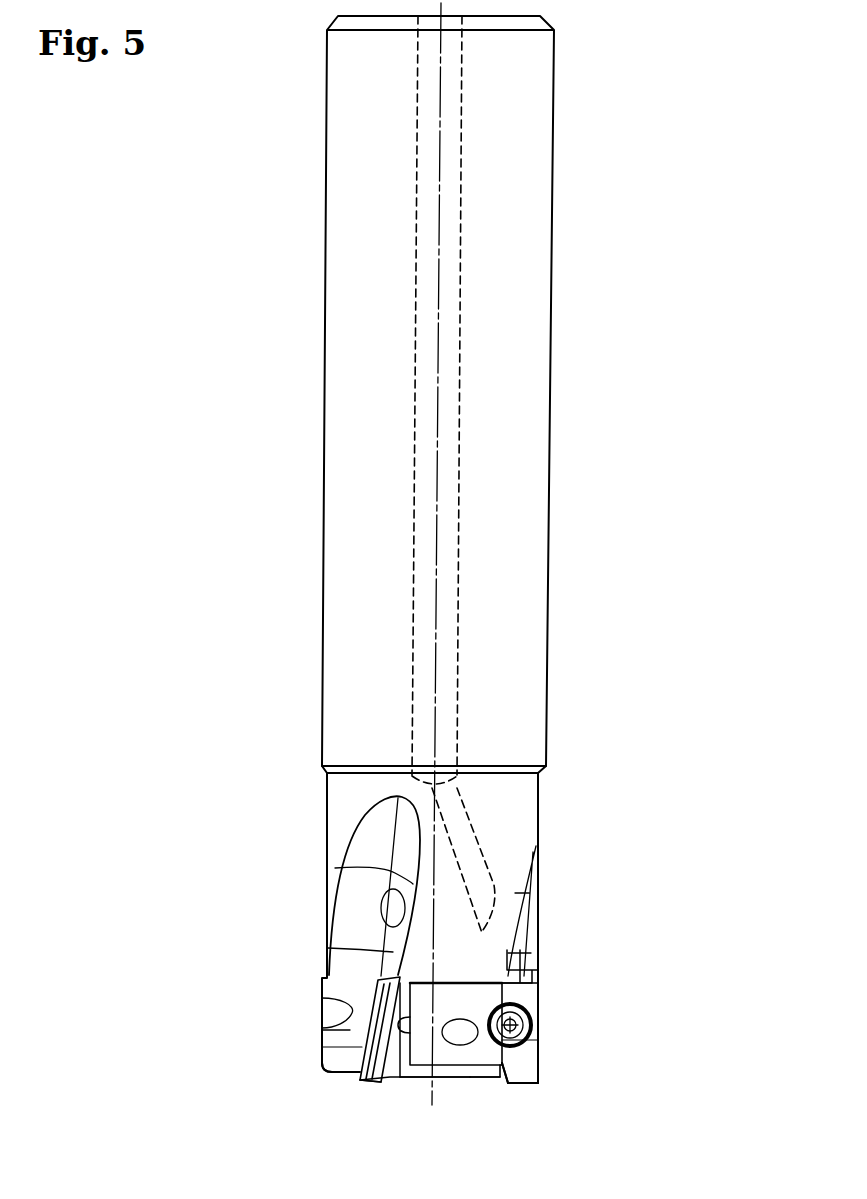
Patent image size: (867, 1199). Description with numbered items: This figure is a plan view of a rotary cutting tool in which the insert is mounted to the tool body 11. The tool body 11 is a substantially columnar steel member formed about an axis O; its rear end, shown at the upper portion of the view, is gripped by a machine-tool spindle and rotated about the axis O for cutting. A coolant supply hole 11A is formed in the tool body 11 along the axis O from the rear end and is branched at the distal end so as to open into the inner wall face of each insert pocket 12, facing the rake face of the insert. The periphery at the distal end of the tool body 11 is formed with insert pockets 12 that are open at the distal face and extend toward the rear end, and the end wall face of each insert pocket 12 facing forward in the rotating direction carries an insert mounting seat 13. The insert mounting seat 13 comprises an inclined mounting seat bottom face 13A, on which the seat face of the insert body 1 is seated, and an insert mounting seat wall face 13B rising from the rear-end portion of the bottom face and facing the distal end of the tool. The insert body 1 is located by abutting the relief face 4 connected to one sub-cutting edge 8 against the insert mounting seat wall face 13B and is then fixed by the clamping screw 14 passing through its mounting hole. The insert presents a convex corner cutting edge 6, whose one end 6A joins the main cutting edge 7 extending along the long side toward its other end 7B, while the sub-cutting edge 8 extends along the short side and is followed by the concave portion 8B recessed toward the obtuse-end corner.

The tool body 11 is at (288, 351).
The axis O is at (440, 217).
The coolant supply hole 11A is at (458, 375).
The insert pocket 12 is at (553, 873).
The insert mounting seat 13 is at (421, 951).
The mounting seat bottom face 13A is at (421, 1086).
The insert mounting seat wall face 13B is at (543, 983).
The insert body 1 is at (568, 1062).
The relief face 4 is at (392, 1085).
The corner cutting edge 6 is at (543, 1085).
The one end of corner cutting edge 6A is at (545, 1083).
The main cutting edge 7 is at (545, 1040).
The other end of main cutting edge 7B is at (544, 976).
The sub-cutting edge 8 is at (527, 1084).
The concave portion 8B is at (505, 1078).
The clamping screw 14 is at (535, 1024).